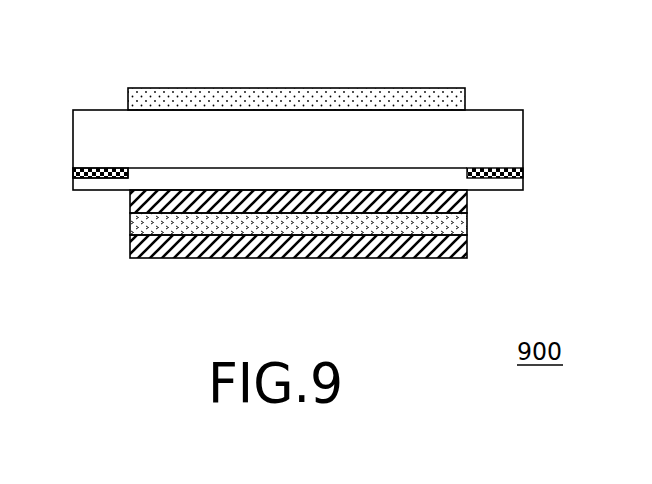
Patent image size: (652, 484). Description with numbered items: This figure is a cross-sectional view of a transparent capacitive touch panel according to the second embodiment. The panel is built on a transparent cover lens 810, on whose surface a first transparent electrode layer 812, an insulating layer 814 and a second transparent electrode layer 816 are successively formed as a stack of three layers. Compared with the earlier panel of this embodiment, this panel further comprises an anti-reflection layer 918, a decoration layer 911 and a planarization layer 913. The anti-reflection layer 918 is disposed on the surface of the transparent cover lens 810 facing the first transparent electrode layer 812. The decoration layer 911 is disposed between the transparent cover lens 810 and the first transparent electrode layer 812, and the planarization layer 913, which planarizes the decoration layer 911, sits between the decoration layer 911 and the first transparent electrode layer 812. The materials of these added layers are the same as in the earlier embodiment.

The transparent cover lens 810 is at (500, 132).
The anti-reflection layer 918 is at (248, 103).
The decoration layer 911 is at (107, 168).
The planarization layer 913 is at (128, 183).
The first transparent electrode layer 812 is at (467, 200).
The insulating layer 814 is at (130, 220).
The second transparent electrode layer 816 is at (467, 247).